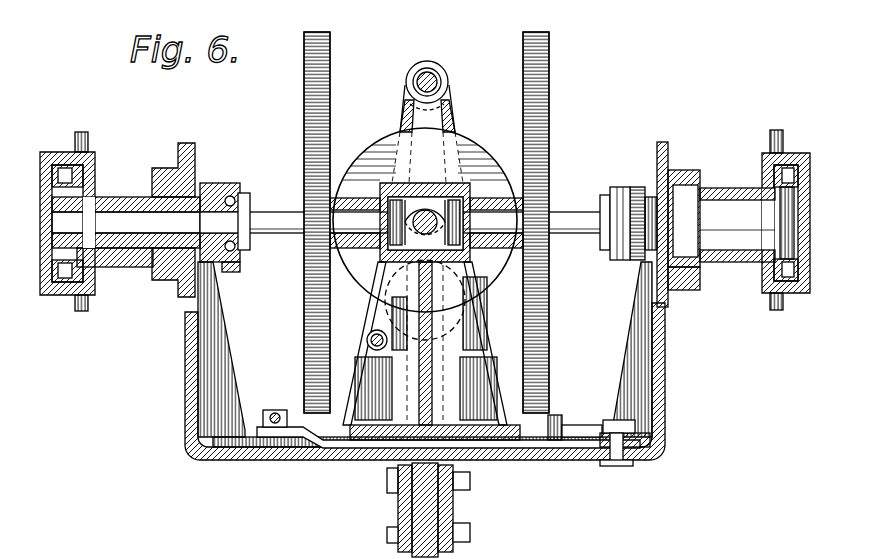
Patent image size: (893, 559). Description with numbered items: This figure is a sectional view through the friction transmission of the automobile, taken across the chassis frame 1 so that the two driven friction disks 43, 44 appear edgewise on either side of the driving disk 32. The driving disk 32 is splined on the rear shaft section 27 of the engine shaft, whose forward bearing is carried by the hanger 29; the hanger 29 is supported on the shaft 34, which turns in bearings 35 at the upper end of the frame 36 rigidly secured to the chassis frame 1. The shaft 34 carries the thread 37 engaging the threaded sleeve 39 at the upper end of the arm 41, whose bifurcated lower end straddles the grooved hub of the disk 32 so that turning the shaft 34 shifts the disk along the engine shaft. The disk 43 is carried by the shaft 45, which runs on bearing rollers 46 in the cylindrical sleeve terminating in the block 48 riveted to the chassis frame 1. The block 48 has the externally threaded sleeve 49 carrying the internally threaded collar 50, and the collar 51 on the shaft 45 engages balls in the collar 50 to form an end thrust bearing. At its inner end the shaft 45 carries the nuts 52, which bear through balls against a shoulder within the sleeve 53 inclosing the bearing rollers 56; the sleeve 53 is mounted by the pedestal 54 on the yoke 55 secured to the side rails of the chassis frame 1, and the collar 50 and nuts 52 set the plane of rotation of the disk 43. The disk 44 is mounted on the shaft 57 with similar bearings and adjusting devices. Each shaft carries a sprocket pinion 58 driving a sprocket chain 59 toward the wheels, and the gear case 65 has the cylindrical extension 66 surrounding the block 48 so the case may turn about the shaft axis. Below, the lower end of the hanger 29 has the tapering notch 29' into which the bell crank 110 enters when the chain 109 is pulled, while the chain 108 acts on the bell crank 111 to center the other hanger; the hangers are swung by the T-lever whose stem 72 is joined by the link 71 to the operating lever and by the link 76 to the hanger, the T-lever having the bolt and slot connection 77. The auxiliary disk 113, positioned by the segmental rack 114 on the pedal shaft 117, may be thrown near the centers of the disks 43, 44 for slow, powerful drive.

The chassis frame 1 is at (170, 168).
The rear shaft section 27 is at (380, 318).
The hanger 29 is at (433, 350).
The tapering notch 29' is at (361, 473).
The driving friction disk 32 is at (477, 158).
The shaft 34 is at (437, 73).
The bearings 35 is at (403, 83).
The frame 36 is at (205, 362).
The thread 37 is at (420, 72).
The threaded sleeve 39 is at (408, 77).
The arm 41 is at (420, 112).
The driven friction disk 43 is at (305, 78).
The driven friction disk 44 is at (545, 124).
The shaft 45 is at (282, 234).
The bearing rollers 46 is at (133, 249).
The block 48 is at (187, 183).
The externally threaded sleeve 49 is at (208, 200).
The internally threaded collar 50 is at (232, 264).
The collar 51 is at (250, 210).
The nuts 52 is at (415, 187).
The sleeve 53 is at (380, 190).
The pedestal 54 is at (433, 355).
The yoke 55 is at (533, 455).
The bearing rollers 56 is at (335, 268).
The shaft 57 is at (580, 203).
The pinion 58 is at (76, 138).
The sprocket chain 59 is at (95, 165).
The gear case 65 is at (58, 296).
The cylindrical extension 66 is at (110, 267).
The link 71 is at (275, 413).
The stem 72 is at (323, 445).
The link 76 is at (585, 420).
The bolt and slot connection 77 is at (617, 466).
The chain 108 is at (440, 472).
The chain 109 is at (403, 540).
The bell crank 110 is at (398, 510).
The bell crank 111 is at (453, 508).
The disk 113 is at (494, 313).
The segmental rack 114 is at (370, 334).
The shaft 117 is at (369, 341).